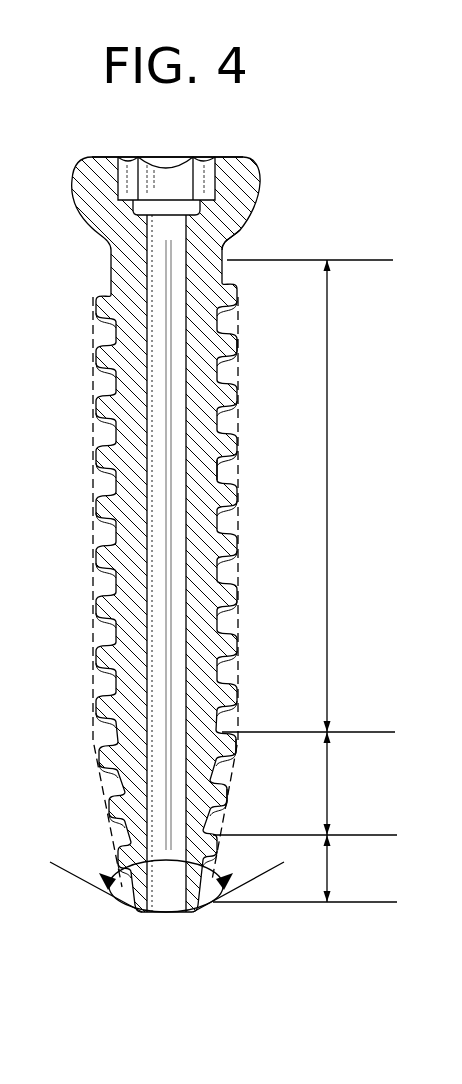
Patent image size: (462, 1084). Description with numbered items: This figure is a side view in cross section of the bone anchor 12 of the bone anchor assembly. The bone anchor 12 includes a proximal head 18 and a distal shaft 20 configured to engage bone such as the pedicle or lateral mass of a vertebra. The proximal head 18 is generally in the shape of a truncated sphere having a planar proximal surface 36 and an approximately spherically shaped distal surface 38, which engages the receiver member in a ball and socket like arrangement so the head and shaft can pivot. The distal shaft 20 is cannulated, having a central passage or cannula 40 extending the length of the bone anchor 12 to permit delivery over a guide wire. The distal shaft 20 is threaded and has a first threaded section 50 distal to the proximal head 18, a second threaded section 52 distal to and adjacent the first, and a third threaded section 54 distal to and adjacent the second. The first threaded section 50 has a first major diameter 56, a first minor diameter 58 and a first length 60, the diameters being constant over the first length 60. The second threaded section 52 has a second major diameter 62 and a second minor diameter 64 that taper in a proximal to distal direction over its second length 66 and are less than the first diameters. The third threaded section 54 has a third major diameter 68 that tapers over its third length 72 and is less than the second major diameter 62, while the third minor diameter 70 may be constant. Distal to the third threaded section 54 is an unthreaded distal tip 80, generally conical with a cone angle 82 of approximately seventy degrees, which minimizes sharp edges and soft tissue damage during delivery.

The bone anchor 12 is at (214, 533).
The proximal head 18 is at (247, 173).
The distal shaft 20 is at (107, 321).
The planar proximal surface 36 is at (102, 156).
The distal surface 38 is at (243, 230).
The cannula 40 is at (172, 172).
The first threaded section 50 is at (340, 466).
The second threaded section 52 is at (345, 796).
The third threaded section 54 is at (362, 890).
The first major diameter 56 is at (238, 363).
The first minor diameter 58 is at (219, 474).
The first length 60 is at (328, 360).
The second major diameter 62 is at (237, 772).
The second minor diameter 64 is at (233, 783).
The second length 66 is at (330, 770).
The third major diameter 68 is at (220, 868).
The third minor diameter 70 is at (222, 888).
The third length 72 is at (330, 870).
The unthreaded distal tip 80 is at (203, 905).
The cone angle 82 is at (170, 858).